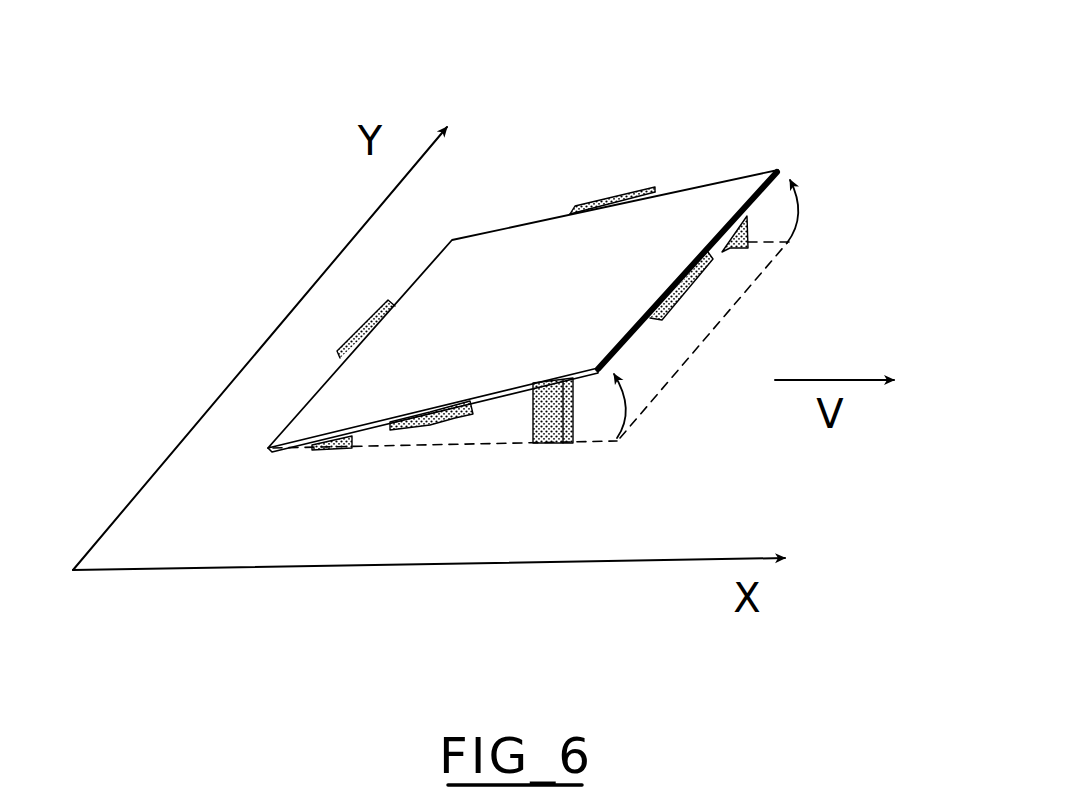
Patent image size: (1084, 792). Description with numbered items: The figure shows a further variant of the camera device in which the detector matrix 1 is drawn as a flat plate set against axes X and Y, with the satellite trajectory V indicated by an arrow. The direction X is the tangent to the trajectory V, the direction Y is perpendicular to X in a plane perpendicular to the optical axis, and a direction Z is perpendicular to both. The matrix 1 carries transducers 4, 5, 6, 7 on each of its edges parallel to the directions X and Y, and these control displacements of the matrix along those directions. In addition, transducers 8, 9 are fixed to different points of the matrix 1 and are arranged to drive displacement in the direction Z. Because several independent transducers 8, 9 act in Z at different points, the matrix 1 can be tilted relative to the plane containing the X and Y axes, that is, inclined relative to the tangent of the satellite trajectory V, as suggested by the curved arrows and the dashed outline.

The matrix 1 is at (735, 150).
The transducer 4 is at (613, 198).
The transducer 5 is at (440, 420).
The transducer 6 is at (697, 280).
The transducer 7 is at (350, 348).
The transducer 8 is at (555, 445).
The transducer 9 is at (338, 448).